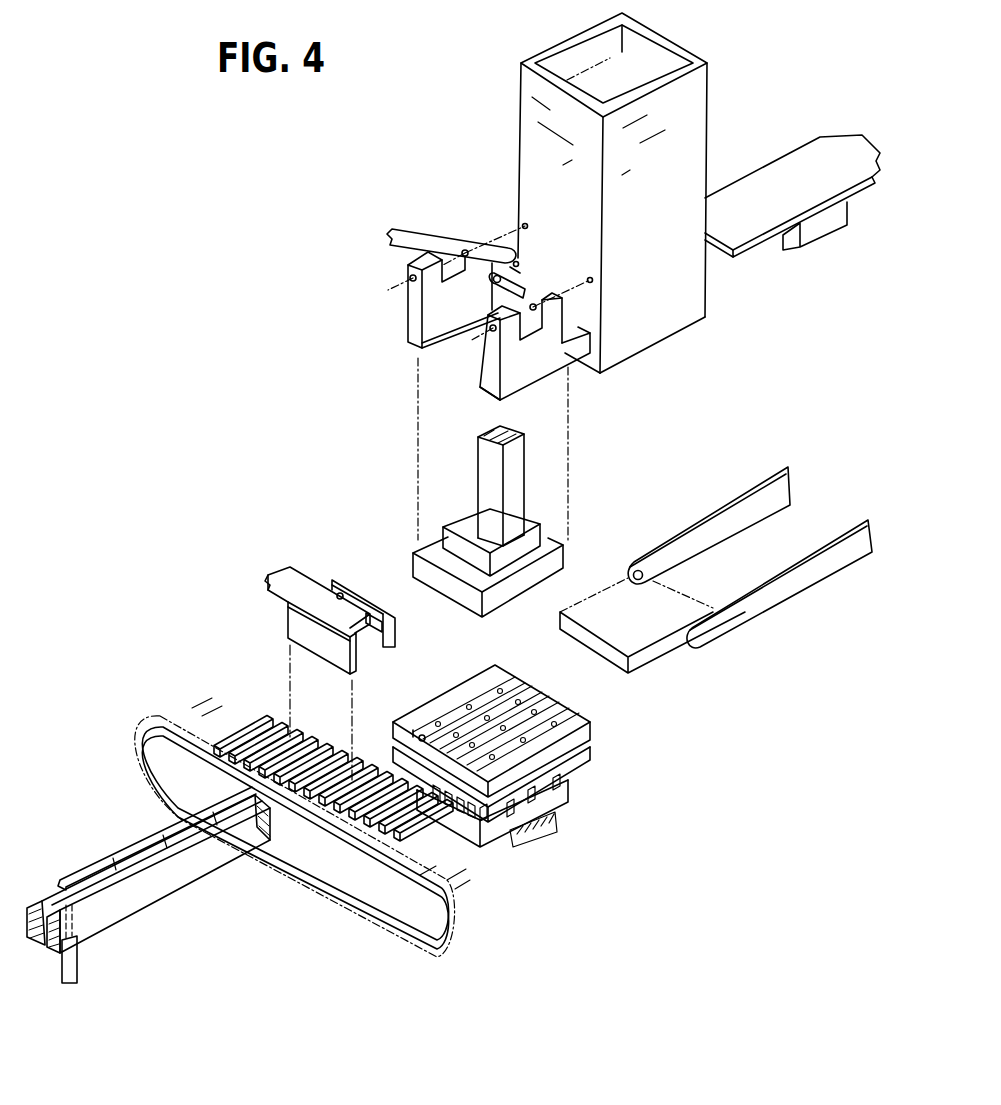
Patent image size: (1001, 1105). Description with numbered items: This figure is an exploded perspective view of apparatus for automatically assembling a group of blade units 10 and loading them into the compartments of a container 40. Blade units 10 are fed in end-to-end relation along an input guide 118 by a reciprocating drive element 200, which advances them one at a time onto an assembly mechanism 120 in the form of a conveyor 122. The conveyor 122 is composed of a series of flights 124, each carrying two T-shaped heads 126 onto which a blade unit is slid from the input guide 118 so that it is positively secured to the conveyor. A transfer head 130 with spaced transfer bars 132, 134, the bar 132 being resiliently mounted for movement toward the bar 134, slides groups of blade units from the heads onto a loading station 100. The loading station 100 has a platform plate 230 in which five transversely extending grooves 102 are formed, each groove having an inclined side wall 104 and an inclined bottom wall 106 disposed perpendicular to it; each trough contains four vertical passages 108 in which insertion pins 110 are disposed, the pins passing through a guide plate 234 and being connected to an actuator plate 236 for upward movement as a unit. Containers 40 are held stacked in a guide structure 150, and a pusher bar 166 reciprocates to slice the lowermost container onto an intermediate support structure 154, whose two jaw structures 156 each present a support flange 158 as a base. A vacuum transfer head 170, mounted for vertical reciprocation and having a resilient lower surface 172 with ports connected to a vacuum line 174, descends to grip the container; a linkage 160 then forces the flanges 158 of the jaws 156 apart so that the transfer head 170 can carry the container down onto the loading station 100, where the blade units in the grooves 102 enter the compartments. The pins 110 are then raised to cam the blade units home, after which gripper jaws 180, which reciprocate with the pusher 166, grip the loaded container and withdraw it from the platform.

The blade unit 10 is at (113, 841).
The container 40 is at (660, 60).
The loading station 100 is at (551, 766).
The grooves 102 is at (565, 698).
The inclined side wall 104 is at (420, 743).
The inclined bottom wall 106 is at (411, 727).
The vertical passages 108 is at (495, 703).
The insertion pin 110 is at (512, 805).
The input guide 118 is at (148, 880).
The assembly mechanism 120 is at (341, 843).
The conveyor 122 is at (486, 868).
The flights 124 is at (312, 812).
The T-shaped heads 126 is at (323, 780).
The transfer head 130 is at (312, 568).
The transfer bar 132 is at (397, 647).
The transfer bar 134 is at (348, 674).
The guide structure 150 is at (710, 101).
The intermediate support structure 154 is at (472, 396).
The jaw structures 156 is at (408, 327).
The support flange 158 is at (480, 387).
The linkage 160 is at (410, 237).
The pusher bar 166 is at (762, 175).
The transfer head 170 is at (550, 524).
The resilient lower surface 172 is at (520, 557).
The vacuum line 174 is at (494, 426).
The gripper jaws 180 is at (710, 532).
The drive element 200 is at (75, 965).
The platform plate 230 is at (510, 728).
The guide plate 234 is at (592, 750).
The actuator plate 236 is at (548, 824).